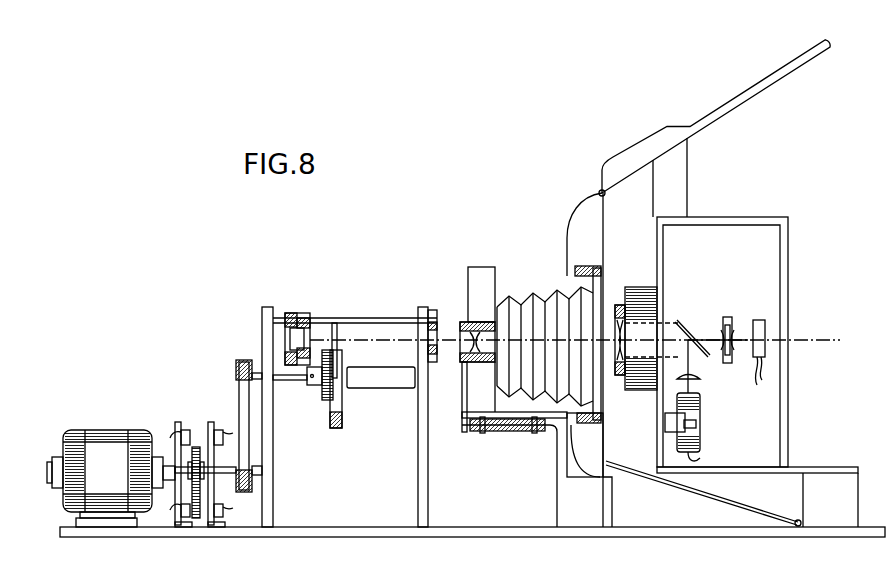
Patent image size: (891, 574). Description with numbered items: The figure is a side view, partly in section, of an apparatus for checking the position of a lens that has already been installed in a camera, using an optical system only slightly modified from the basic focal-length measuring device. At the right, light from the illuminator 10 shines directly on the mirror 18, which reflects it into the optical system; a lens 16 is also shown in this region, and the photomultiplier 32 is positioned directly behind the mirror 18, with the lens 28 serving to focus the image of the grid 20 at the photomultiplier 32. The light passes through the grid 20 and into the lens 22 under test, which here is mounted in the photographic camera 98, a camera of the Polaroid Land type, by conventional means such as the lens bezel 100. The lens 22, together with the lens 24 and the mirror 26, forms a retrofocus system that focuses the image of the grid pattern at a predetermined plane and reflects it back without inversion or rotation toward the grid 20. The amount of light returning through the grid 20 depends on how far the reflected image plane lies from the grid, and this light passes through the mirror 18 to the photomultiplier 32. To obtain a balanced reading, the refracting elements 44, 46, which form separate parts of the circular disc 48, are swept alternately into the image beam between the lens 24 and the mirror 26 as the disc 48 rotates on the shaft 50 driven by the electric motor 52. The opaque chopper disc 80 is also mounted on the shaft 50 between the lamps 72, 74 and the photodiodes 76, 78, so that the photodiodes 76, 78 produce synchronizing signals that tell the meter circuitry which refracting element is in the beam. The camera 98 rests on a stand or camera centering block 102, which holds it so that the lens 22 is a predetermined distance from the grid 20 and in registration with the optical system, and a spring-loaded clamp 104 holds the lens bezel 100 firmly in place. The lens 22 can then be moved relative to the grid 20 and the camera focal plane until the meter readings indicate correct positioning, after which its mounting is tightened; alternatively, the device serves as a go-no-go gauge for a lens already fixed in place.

The illuminator 10 is at (703, 421).
The lens 16 is at (700, 378).
The mirror 18 is at (684, 320).
The grid 20 is at (640, 290).
The lens 22 is at (463, 322).
The lens 24 is at (430, 332).
The mirror 26 is at (289, 313).
The lens 28 is at (724, 325).
The photomultiplier 32 is at (757, 320).
The refracting element 44 is at (336, 330).
The refracting element 46 is at (337, 425).
The circular disc 48 is at (347, 401).
The shaft 50 is at (228, 467).
The electric motor 52 is at (124, 430).
The lamp 72 is at (170, 512).
The lamp 74 is at (170, 438).
The photodiode 76 is at (218, 517).
The photodiode 78 is at (216, 432).
The opaque chopper disc 80 is at (196, 447).
The photographic camera 98 is at (548, 253).
The lens bezel 100 is at (464, 362).
The camera centering block 102 is at (564, 499).
The spring-loaded clamp 104 is at (462, 425).